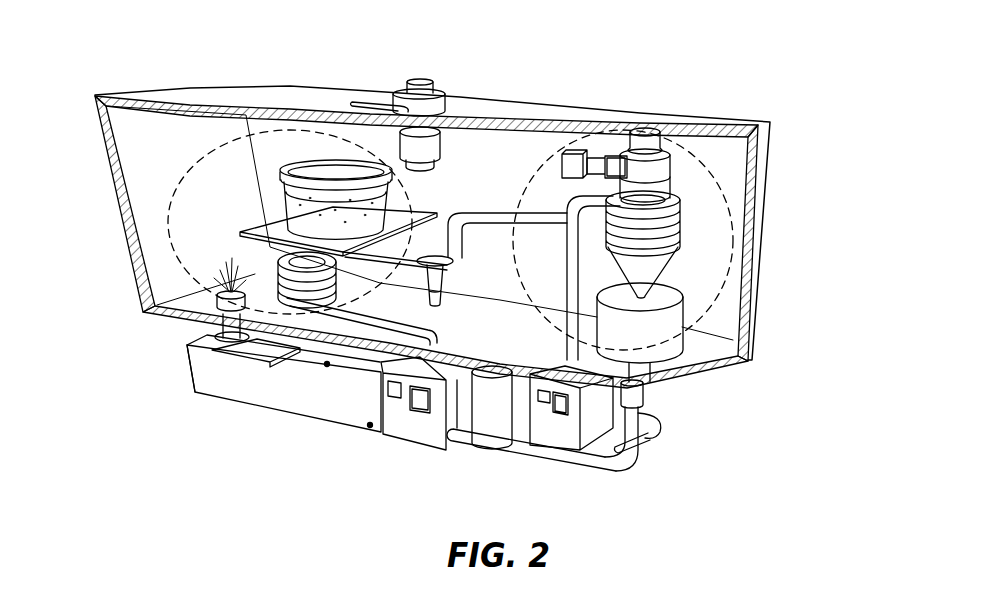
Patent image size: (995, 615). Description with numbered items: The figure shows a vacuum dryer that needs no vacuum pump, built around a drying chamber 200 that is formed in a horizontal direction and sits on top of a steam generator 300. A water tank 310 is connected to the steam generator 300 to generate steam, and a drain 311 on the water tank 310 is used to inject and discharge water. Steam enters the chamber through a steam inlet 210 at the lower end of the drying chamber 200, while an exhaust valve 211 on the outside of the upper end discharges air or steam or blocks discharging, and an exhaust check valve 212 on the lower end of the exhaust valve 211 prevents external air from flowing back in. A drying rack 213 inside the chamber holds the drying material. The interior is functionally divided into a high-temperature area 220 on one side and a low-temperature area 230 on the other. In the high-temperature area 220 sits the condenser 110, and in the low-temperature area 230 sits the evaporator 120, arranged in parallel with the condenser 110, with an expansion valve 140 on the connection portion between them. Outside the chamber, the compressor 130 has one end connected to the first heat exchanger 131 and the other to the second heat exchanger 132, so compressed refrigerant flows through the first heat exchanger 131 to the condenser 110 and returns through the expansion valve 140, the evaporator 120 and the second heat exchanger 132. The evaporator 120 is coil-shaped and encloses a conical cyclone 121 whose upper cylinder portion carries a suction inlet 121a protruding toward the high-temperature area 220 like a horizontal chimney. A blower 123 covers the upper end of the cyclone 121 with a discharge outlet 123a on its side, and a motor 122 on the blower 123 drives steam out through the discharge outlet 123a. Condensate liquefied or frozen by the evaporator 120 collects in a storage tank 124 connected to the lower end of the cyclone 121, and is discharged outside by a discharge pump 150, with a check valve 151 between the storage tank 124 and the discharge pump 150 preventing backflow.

The drying chamber 200 is at (317, 87).
The steam inlet 210 is at (215, 334).
The exhaust valve 211 is at (420, 82).
The exhaust check valve 212 is at (430, 150).
The drying rack 213 is at (270, 192).
The high-temperature area 220 is at (215, 147).
The low-temperature area 230 is at (705, 157).
The condenser 110 is at (218, 302).
The expansion valve 140 is at (447, 258).
The suction inlet 121a is at (575, 160).
The discharge outlet 123a is at (646, 130).
The motor 122 is at (652, 128).
The blower 123 is at (672, 172).
The evaporator 120 is at (677, 216).
The cyclone 121 is at (648, 268).
The storage tank 124 is at (652, 323).
The check valve 151 is at (645, 397).
The discharge pump 150 is at (652, 434).
The steam generator 300 is at (189, 350).
The water tank 310 is at (258, 393).
The drain 311 is at (366, 430).
The first heat exchanger 131 is at (417, 430).
The compressor 130 is at (493, 423).
The second heat exchanger 132 is at (555, 442).